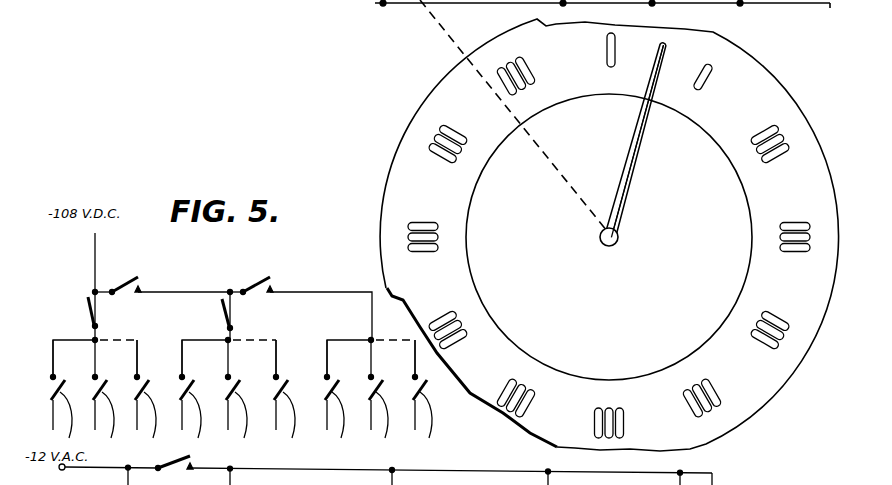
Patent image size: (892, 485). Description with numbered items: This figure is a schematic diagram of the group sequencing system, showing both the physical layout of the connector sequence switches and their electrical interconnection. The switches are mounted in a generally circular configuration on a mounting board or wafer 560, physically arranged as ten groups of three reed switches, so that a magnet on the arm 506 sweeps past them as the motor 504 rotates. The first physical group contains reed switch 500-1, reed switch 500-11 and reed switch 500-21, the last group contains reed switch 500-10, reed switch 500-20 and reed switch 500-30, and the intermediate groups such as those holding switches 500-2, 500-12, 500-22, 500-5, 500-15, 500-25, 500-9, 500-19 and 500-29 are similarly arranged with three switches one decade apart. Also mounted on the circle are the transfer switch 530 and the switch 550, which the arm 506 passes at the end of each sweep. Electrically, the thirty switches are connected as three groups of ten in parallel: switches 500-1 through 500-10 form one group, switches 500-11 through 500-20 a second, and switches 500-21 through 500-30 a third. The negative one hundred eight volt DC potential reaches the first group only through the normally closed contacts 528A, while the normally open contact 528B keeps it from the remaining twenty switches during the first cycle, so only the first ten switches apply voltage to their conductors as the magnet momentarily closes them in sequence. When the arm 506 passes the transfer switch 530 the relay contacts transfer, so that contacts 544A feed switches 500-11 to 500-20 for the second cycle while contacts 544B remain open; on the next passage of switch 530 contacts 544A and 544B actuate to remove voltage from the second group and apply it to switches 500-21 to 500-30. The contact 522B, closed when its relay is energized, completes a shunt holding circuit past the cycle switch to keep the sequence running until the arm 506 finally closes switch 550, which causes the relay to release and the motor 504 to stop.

The motor 504 is at (668, 57).
The arm 506 is at (625, 204).
The transfer switch 530 is at (711, 78).
The switch 550 is at (606, 45).
The mounting board or wafer 560 is at (778, 82).
The reed switch 500-1 is at (531, 66).
The reed switch 500-2 is at (440, 128).
The reed switch 500-5 is at (514, 380).
The reed switch 500-9 is at (780, 248).
The reed switch 500-10 is at (762, 160).
The reed switch 500-11 is at (524, 89).
The reed switch 500-12 is at (435, 137).
The reed switch 500-15 is at (523, 385).
The reed switch 500-19 is at (780, 237).
The reed switch 500-20 is at (757, 151).
The reed switch 500-21 is at (515, 94).
The reed switch 500-22 is at (430, 146).
The reed switch 500-25 is at (532, 390).
The reed switch 500-29 is at (780, 227).
The reed switch 500-30 is at (752, 142).
The contacts of relay 528 528A is at (97, 321).
The contact of relay 528 528B is at (137, 276).
The contacts of relay 544 544A is at (233, 321).
The contacts of relay 544 544B is at (270, 276).
The contact of relay 522 522B is at (190, 459).